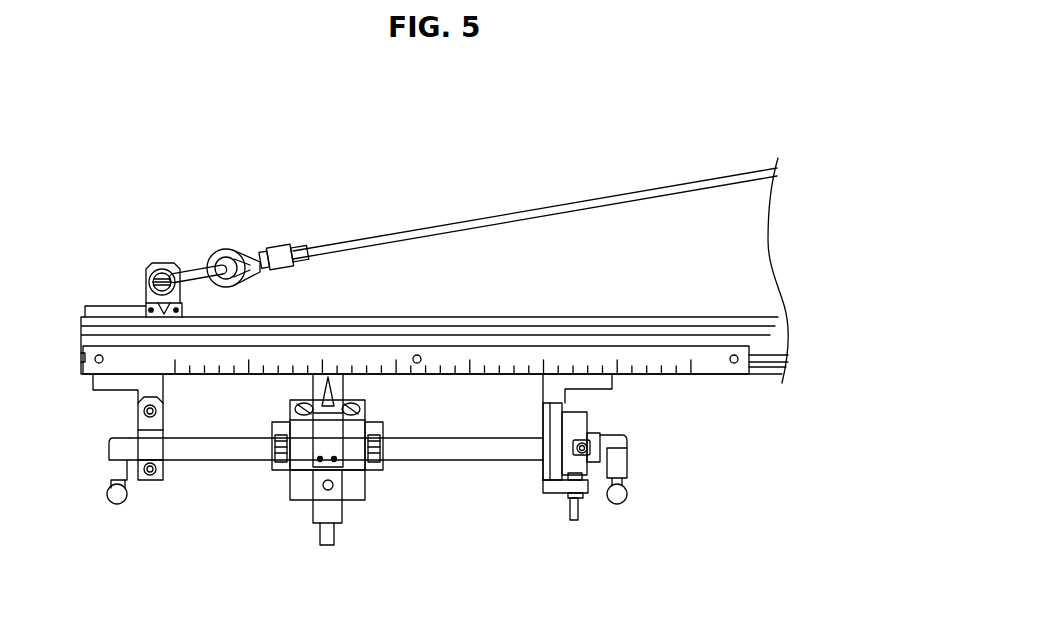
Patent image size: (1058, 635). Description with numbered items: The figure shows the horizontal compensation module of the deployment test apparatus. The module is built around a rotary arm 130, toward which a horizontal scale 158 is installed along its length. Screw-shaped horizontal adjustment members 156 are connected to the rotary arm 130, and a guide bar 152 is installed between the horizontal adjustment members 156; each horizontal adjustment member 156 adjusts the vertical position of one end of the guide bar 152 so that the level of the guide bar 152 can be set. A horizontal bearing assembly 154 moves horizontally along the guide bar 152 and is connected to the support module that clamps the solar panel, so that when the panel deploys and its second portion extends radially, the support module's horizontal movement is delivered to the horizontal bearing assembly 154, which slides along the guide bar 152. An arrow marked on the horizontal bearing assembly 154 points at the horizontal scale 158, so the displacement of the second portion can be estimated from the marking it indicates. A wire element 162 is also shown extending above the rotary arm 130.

The rotary arm 130 is at (433, 327).
The guide bar 152 is at (463, 460).
The horizontal bearing assembly 154 is at (342, 502).
The horizontal adjustment member 156 is at (627, 483).
The horizontal scale 158 is at (512, 358).
The wire 162 is at (532, 207).